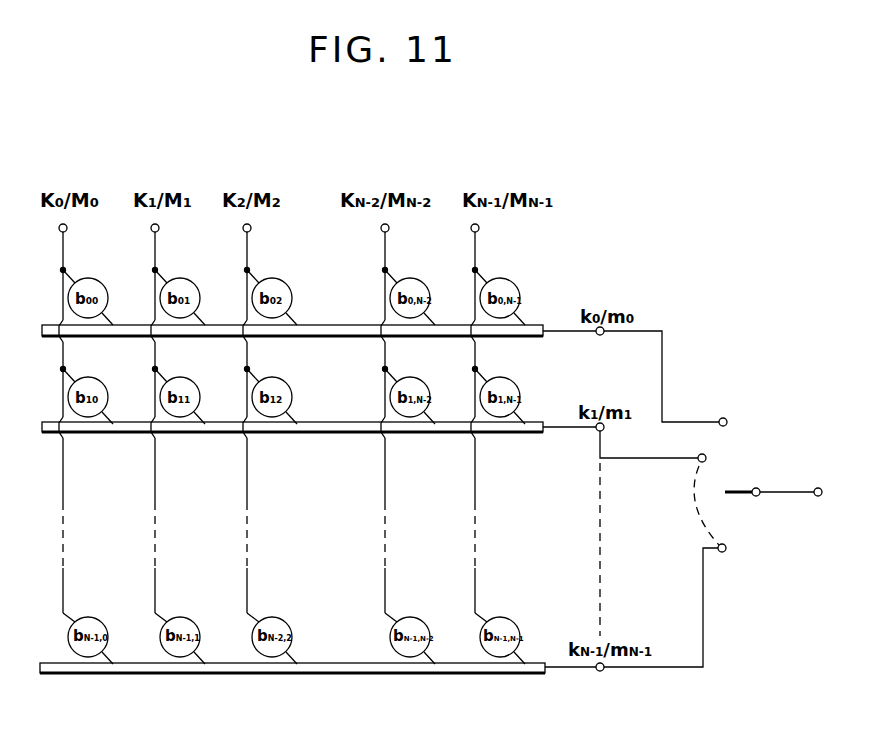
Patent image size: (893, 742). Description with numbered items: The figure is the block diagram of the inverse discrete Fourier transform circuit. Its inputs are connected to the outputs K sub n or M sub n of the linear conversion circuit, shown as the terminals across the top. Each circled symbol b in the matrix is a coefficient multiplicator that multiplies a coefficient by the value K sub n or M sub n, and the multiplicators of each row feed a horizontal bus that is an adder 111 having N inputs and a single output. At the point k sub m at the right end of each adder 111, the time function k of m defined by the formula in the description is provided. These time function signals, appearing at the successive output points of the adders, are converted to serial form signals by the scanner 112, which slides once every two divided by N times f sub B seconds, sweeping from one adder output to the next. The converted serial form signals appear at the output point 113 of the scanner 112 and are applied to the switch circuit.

The adder 111 is at (44, 337).
The scanner 112 is at (755, 496).
The output point of the scanner 113 is at (819, 496).